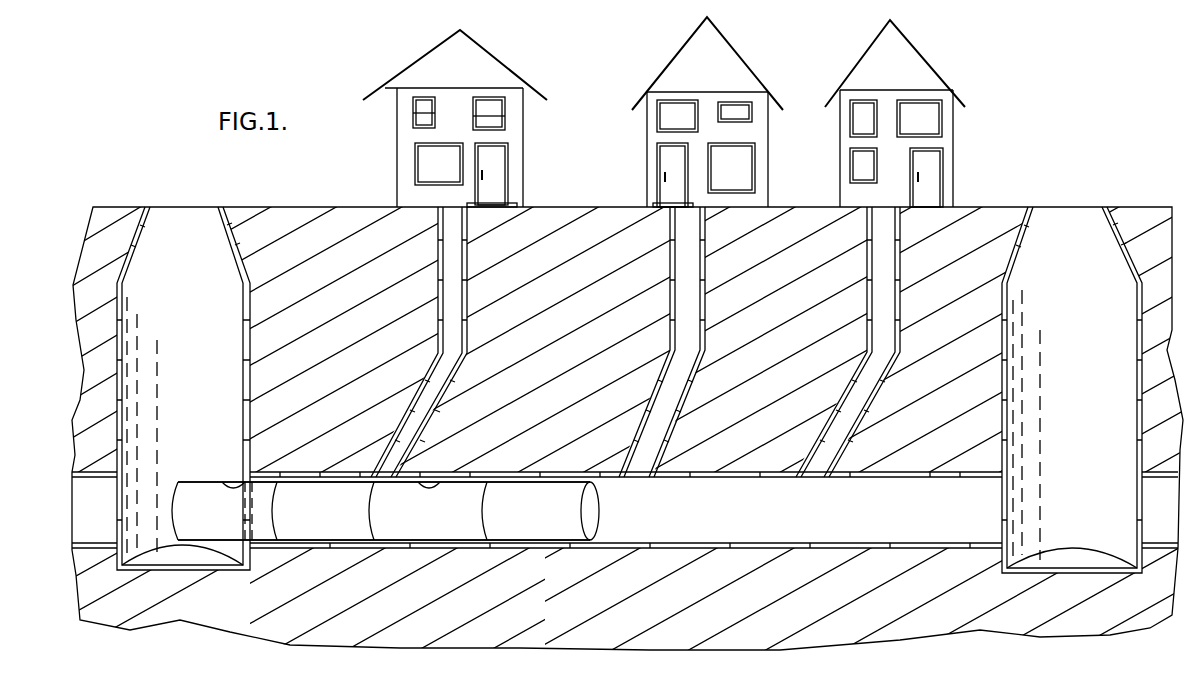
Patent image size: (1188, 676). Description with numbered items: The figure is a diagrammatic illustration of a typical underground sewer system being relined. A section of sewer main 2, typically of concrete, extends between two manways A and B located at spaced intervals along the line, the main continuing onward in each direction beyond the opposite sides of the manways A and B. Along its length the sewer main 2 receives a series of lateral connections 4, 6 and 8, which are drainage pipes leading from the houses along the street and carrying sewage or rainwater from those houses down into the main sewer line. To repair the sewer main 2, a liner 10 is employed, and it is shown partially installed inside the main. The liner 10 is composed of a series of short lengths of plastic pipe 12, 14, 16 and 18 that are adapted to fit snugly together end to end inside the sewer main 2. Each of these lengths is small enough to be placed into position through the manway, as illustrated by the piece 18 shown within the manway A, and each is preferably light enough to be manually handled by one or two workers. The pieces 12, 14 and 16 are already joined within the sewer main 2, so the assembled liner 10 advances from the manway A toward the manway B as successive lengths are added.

The sewer main 2 is at (690, 545).
The lateral connection 4 is at (437, 410).
The lateral connection 6 is at (672, 411).
The lateral connection 8 is at (857, 428).
The liner 10 is at (407, 511).
The short length of plastic pipe 12 is at (545, 529).
The short length of plastic pipe 14 is at (435, 529).
The short length of plastic pipe 16 is at (326, 529).
The short length of plastic pipe 18 is at (224, 529).
The manway A is at (191, 409).
The manway B is at (1073, 422).